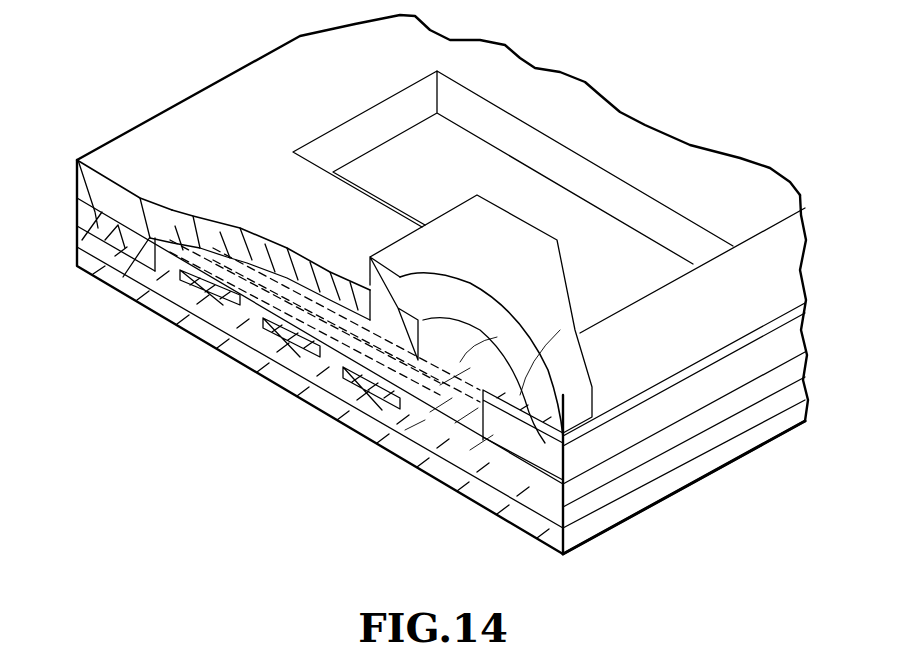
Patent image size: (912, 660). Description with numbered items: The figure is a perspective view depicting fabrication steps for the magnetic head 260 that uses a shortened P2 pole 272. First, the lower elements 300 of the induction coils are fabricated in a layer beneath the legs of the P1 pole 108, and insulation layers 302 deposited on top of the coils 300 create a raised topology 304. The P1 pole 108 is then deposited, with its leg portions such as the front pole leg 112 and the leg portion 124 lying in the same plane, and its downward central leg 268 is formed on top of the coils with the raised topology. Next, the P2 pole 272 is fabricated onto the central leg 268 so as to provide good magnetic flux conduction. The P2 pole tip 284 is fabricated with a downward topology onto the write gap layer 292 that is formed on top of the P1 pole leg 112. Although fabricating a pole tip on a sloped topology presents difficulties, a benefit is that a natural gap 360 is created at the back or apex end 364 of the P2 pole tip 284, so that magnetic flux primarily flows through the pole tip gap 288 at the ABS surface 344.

The P1 pole 108 is at (512, 66).
The P2 pole embodiment (magnetic head) 260 is at (684, 62).
The leg portion of the P1 pole 124 is at (85, 188).
The central leg 268 is at (347, 200).
The shortened P2 pole 272 is at (479, 222).
The back or apex end of the P2 pole tip 364 is at (548, 296).
The P2 pole tip 284 is at (577, 382).
The raised topology 304 is at (254, 283).
The insulation layers 302 is at (222, 272).
The lower elements of the induction coils 300 is at (203, 303).
The natural gap 360 is at (453, 407).
The front pole leg (P1 pole leg) 112 is at (512, 437).
The ABS surface 344 is at (705, 387).
The write gap layer 292 is at (620, 413).
The pole tip gap 288 is at (573, 437).